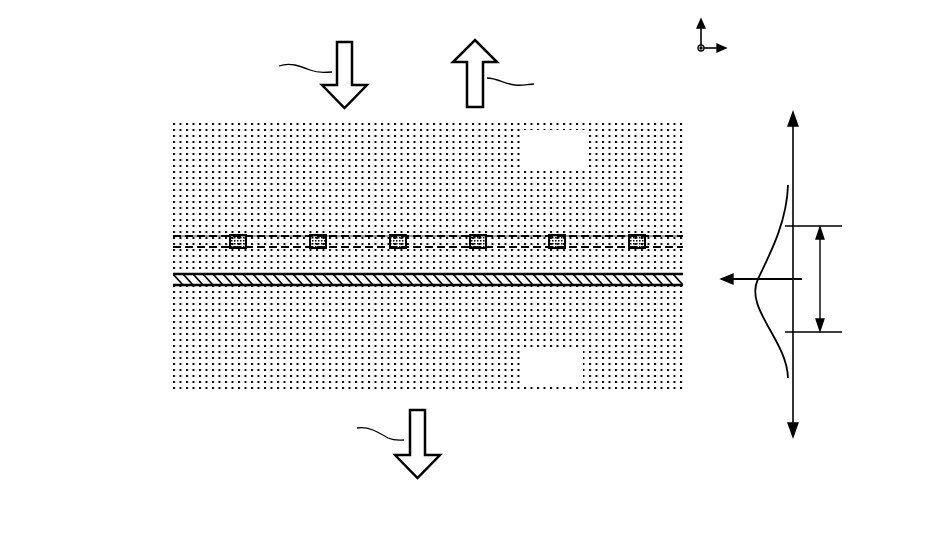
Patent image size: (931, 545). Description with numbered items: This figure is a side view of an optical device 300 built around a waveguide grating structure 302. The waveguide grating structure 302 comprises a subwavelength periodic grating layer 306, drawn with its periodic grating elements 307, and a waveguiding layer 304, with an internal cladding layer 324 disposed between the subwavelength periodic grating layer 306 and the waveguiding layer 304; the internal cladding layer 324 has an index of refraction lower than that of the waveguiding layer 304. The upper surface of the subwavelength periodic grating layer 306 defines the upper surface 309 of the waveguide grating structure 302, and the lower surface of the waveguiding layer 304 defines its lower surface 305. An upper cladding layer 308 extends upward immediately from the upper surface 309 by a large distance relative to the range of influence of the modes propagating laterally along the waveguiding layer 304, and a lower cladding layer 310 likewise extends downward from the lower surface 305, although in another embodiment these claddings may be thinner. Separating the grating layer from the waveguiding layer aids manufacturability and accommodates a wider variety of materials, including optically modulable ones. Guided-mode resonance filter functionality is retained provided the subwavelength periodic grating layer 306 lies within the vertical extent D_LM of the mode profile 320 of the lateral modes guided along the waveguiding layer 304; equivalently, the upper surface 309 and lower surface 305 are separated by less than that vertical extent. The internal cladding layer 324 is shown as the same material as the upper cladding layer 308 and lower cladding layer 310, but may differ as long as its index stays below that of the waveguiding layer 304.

The optical device 300 is at (143, 53).
The waveguide grating structure 302 is at (85, 210).
The waveguiding layer 304 is at (171, 280).
The lower surface 305 is at (200, 286).
The subwavelength periodic grating layer 306 is at (173, 242).
The grating elements 307 is at (320, 236).
The upper cladding layer 308 is at (572, 160).
The upper surface 309 is at (212, 236).
The lower cladding layer 310 is at (570, 378).
The mode profile 320 is at (768, 242).
The internal cladding layer 324 is at (173, 265).